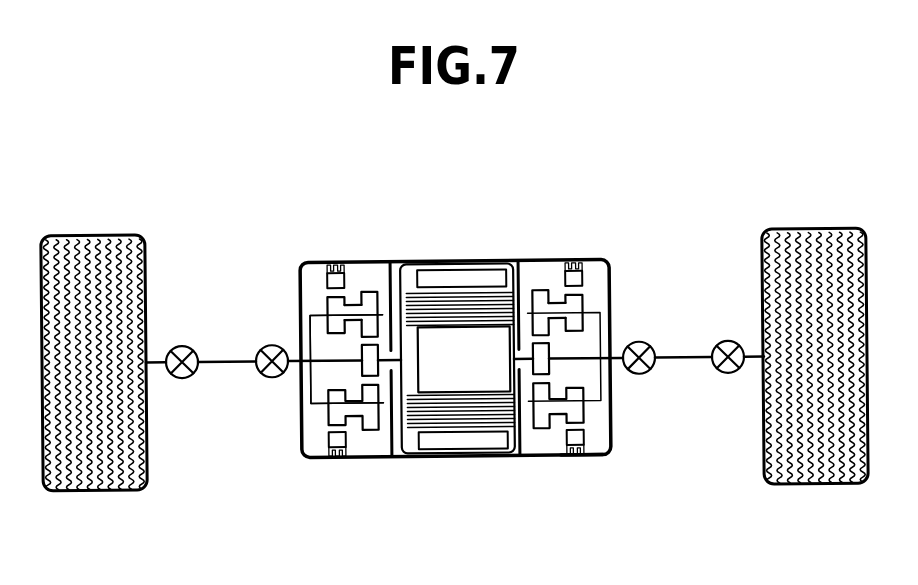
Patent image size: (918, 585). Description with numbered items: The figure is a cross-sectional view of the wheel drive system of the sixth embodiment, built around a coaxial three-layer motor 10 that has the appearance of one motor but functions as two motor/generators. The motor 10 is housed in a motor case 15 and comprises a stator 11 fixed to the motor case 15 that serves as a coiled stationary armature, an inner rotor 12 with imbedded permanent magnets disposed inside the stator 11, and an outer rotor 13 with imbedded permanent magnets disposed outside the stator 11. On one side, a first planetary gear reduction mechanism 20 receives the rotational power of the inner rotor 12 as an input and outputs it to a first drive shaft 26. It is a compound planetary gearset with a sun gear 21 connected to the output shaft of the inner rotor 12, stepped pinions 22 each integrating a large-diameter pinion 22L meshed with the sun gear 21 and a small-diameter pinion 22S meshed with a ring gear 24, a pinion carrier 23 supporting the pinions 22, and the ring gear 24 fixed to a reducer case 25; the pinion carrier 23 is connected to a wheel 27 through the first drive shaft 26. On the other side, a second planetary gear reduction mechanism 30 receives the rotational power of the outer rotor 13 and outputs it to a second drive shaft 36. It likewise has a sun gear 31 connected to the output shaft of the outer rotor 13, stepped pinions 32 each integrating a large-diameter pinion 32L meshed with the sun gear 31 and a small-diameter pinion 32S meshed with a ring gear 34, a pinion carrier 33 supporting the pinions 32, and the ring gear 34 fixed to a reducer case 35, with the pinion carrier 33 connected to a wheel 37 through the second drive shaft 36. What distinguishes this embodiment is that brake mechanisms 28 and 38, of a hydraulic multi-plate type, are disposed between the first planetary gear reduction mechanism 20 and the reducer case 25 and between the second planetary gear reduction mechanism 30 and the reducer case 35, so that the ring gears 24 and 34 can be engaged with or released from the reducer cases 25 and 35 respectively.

The coaxial three-layer motor 10 is at (461, 245).
The stator 11 is at (468, 303).
The inner rotor 12 is at (457, 373).
The outer rotor 13 is at (459, 275).
The motor case 15 is at (431, 458).
The first planetary gear reduction mechanism 20 is at (532, 466).
The sun gear 21 is at (542, 361).
The pinions 22 is at (562, 306).
The large-diameter pinion 22L is at (542, 296).
The small-diameter pinion 22S is at (582, 309).
The pinion carrier 23 is at (585, 404).
The ring gear 24 is at (566, 458).
The reducer case 25 is at (587, 449).
The first drive shaft 26 is at (683, 357).
The wheel 27 is at (809, 231).
The brake mechanism 28 is at (589, 456).
The second planetary gear reduction mechanism 30 is at (374, 464).
The sun gear 31 is at (362, 369).
The pinions 32 is at (352, 295).
The large-diameter pinion 32L is at (371, 291).
The small-diameter pinion 32S is at (328, 309).
The pinion carrier 33 is at (302, 334).
The ring gear 34 is at (327, 442).
The reducer case 35 is at (310, 402).
The second drive shaft 36 is at (224, 356).
The wheel 37 is at (97, 229).
The brake mechanism 38 is at (351, 457).